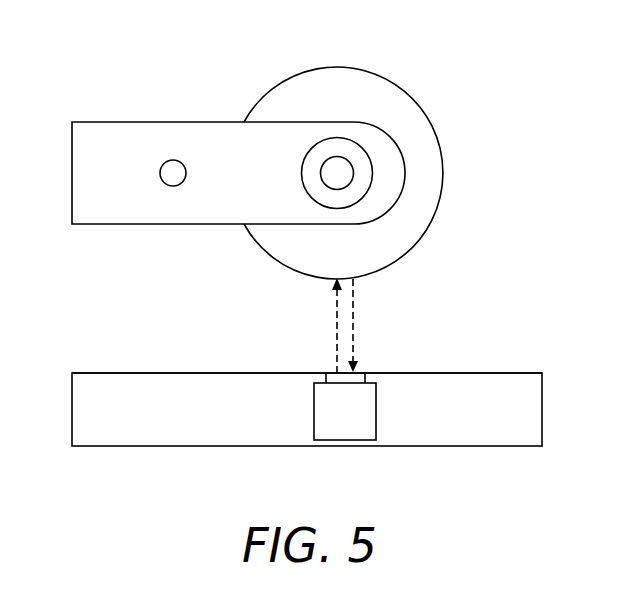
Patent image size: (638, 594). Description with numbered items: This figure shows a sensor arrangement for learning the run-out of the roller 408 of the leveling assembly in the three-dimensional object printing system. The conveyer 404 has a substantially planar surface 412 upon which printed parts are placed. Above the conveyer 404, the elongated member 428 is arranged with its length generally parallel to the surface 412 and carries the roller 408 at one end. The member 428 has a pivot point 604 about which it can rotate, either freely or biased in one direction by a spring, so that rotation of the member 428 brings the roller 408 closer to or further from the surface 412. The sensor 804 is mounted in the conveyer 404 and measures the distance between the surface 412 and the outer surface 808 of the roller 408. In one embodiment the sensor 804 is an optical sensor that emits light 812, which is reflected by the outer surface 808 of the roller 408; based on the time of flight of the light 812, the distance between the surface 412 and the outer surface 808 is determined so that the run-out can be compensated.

The conveyer 404 is at (470, 433).
The roller 408 is at (365, 78).
The surface 412 is at (147, 373).
The member 428 is at (97, 122).
The pivot point 604 is at (174, 160).
The sensor 804 is at (362, 430).
The outer surface 808 is at (335, 280).
The light 812 is at (360, 332).